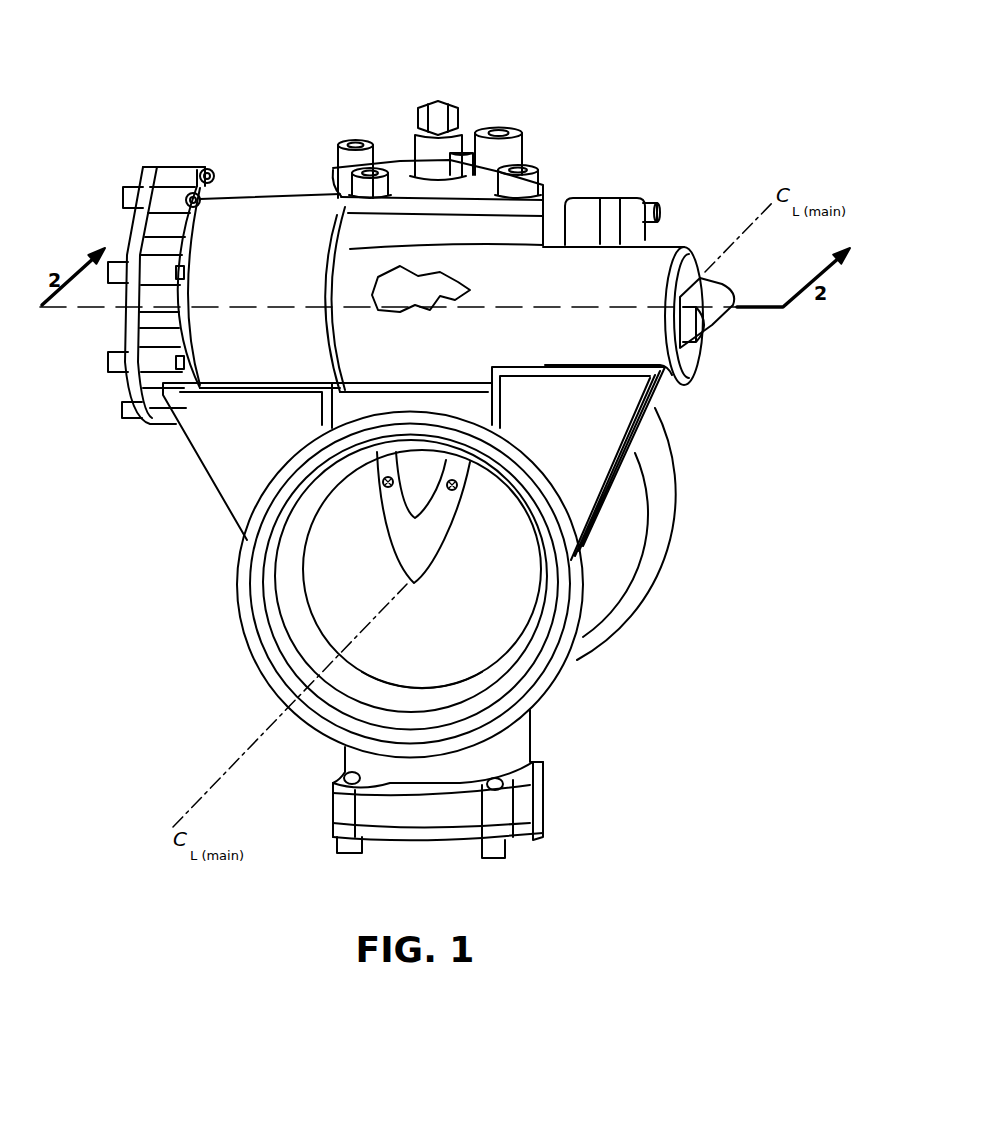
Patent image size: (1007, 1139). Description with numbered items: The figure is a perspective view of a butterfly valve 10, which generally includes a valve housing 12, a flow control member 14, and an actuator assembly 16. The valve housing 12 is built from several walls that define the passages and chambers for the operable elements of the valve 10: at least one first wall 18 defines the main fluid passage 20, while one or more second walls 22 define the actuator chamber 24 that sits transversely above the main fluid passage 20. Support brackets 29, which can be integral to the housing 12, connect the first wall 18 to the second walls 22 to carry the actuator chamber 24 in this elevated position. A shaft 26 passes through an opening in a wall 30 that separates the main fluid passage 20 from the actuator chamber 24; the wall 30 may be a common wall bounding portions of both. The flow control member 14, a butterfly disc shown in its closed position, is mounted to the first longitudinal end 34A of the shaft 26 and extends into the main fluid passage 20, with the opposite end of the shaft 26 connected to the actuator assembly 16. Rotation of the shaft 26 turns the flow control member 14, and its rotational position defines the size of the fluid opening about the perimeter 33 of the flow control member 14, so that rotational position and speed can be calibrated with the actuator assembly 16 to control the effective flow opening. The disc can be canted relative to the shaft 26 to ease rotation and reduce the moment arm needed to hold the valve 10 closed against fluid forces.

The valve 10 is at (692, 120).
The valve housing 12 is at (238, 100).
The flow control member 14 is at (498, 619).
The actuator assembly 16 is at (633, 280).
The first wall 18 is at (312, 647).
The main fluid passage 20 is at (340, 574).
The second walls 22 is at (261, 263).
The actuator chamber 24 is at (443, 280).
The shaft 26 is at (372, 544).
The support brackets 29 is at (259, 441).
The wall 30 is at (477, 415).
The perimeter 33 is at (440, 687).
The first longitudinal end 34A is at (417, 490).